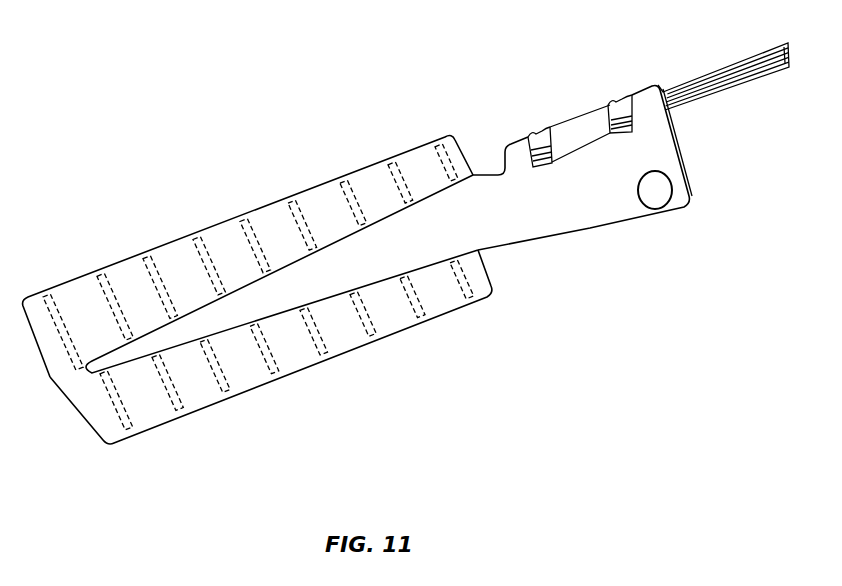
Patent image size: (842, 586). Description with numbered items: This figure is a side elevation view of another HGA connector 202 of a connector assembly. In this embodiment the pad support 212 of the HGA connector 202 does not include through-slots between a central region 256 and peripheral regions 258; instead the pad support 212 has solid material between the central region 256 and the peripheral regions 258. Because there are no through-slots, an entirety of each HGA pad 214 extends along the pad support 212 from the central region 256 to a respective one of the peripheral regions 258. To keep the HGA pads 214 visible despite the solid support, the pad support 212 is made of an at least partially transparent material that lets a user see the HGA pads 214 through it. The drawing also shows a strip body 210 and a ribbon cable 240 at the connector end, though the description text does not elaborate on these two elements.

The HGA connector 202 is at (595, 80).
The strip body 210 is at (457, 240).
The pad support 212 is at (325, 217).
The HGA pad 214 is at (172, 276).
The ribbon cable 240 is at (706, 88).
The central region 256 is at (173, 350).
The peripheral regions 258 is at (252, 214).